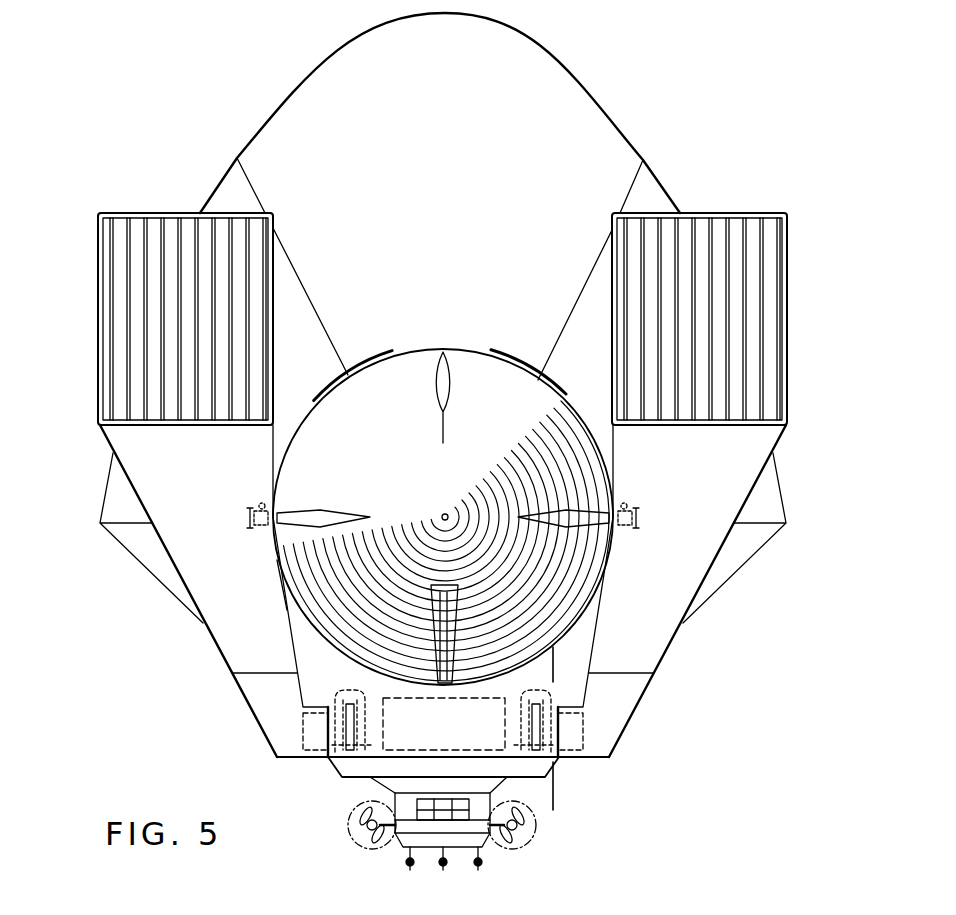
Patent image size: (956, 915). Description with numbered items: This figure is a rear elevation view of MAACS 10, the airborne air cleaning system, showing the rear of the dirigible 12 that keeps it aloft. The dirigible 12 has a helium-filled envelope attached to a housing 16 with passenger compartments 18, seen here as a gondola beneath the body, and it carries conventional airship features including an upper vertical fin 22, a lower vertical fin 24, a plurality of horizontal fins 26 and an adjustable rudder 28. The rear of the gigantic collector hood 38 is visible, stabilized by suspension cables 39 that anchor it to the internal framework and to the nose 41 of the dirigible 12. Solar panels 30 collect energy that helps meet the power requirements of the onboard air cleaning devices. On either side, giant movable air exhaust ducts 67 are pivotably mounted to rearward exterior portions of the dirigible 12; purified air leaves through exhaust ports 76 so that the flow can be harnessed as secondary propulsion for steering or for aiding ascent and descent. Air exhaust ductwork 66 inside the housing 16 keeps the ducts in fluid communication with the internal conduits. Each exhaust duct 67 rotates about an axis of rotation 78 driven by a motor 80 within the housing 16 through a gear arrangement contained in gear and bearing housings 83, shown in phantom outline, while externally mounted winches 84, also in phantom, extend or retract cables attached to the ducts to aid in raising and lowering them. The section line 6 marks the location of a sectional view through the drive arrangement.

The MAACS 10 is at (220, 126).
The dirigible 12 is at (291, 601).
The housing 16 is at (326, 658).
The passenger compartments 18 is at (418, 830).
The upper vertical fin 22 is at (455, 397).
The lower vertical fin 24 is at (462, 607).
The horizontal fins 26 is at (327, 508).
The adjustable rudder 28 is at (430, 615).
The solar panels 30 is at (356, 356).
The collector hood 38 is at (570, 107).
The suspension cables 39 is at (290, 257).
The nose 41 is at (444, 512).
The air exhaust ductwork 66 is at (372, 738).
The movable air exhaust ducts 67 is at (222, 602).
The exhaust ports 76 is at (133, 242).
The axis of rotation 78 is at (332, 732).
The motor 80 is at (350, 689).
The gear and bearing housings 83 is at (322, 752).
The winches 84 is at (247, 518).
The section line 6- 6 is at (558, 655).